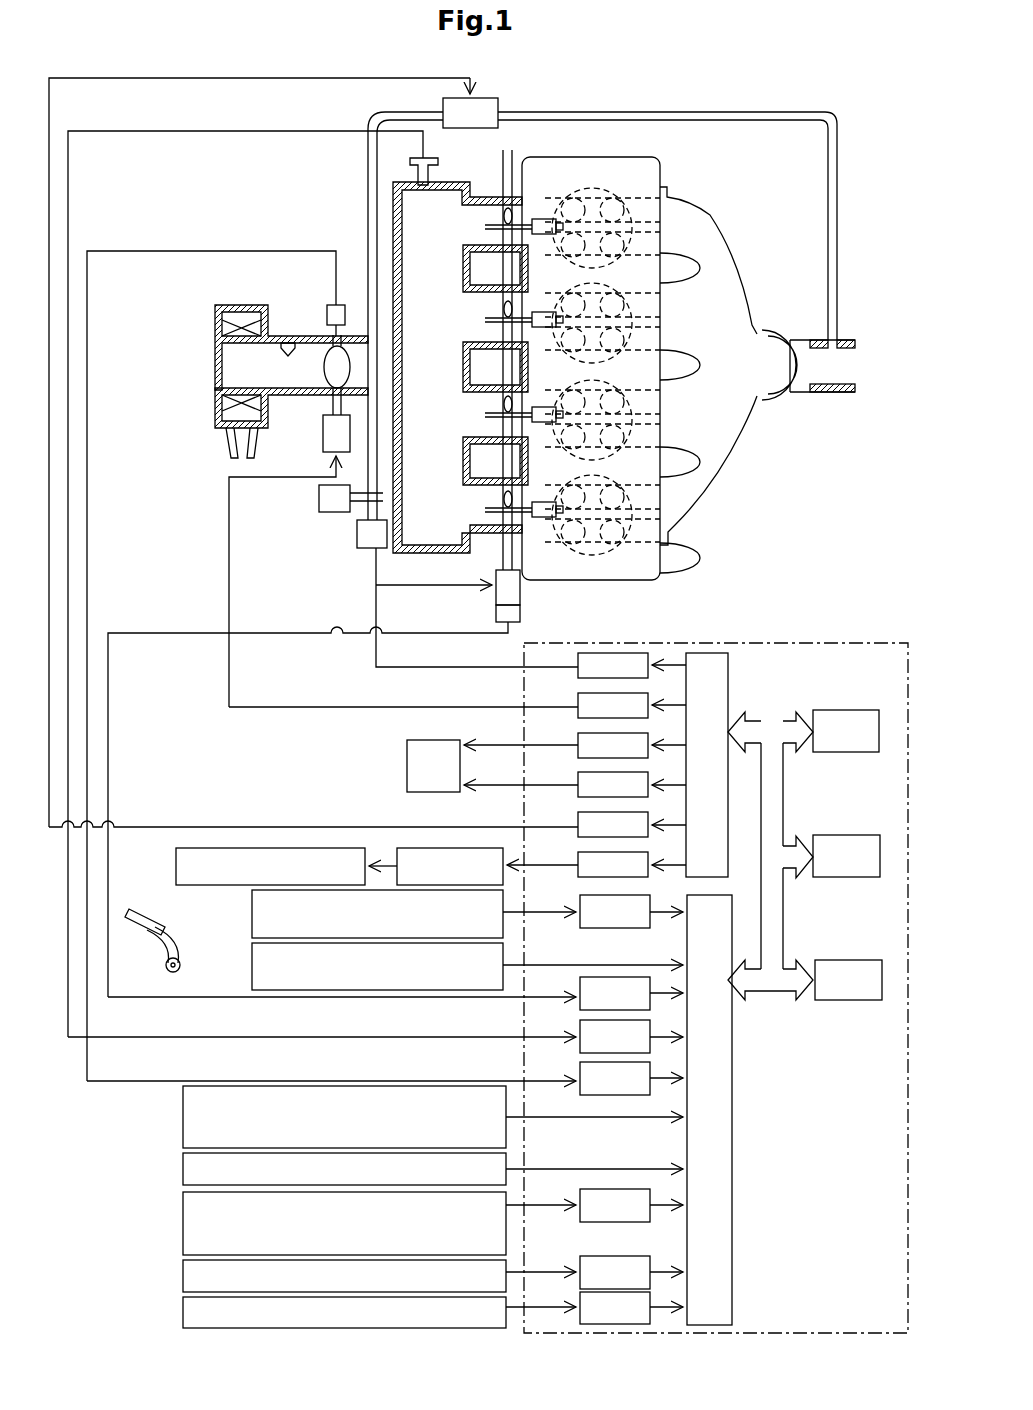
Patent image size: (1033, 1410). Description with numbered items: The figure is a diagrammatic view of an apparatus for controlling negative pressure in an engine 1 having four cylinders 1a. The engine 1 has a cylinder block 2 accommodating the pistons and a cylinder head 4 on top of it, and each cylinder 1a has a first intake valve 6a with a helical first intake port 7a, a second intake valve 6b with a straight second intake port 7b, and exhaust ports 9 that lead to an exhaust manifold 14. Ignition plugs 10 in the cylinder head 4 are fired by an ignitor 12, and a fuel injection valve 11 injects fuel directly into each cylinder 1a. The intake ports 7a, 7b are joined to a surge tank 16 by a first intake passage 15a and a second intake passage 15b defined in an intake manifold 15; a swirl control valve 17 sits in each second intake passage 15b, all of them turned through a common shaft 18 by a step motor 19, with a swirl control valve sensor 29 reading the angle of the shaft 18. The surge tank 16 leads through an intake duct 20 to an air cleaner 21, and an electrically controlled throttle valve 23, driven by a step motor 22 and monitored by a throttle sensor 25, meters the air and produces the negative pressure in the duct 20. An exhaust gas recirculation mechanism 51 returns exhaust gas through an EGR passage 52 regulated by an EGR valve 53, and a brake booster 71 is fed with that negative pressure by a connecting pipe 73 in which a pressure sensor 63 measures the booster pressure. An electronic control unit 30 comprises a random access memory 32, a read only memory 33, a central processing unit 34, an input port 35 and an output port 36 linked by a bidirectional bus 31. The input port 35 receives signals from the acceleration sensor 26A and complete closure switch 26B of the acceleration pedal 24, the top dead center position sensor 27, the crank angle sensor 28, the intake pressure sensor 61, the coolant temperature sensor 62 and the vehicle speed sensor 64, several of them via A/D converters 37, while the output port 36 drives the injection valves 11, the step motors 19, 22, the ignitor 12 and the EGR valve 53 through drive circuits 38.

The engine 1 is at (665, 163).
The cylinder 1a is at (674, 170).
The cylinder block 2 is at (611, 373).
The cylinder head 4 is at (611, 373).
The first intake valve 6a is at (584, 408).
The second intake valve 6b is at (610, 333).
The first intake port 7a is at (575, 592).
The second intake port 7b is at (590, 150).
The exhaust port 9 is at (666, 226).
The ignition plug 10 is at (322, 848).
The fuel injection valve 11 is at (547, 210).
The ignitor 12 is at (480, 848).
The exhaust manifold 14 is at (752, 424).
The intake manifold 15 is at (470, 190).
The first intake passage 15a is at (485, 247).
The second intake passage 15b is at (485, 226).
The surge tank 16 is at (368, 213).
The swirl control valve 17 is at (503, 195).
The common shaft 18 is at (462, 366).
The step motor 19 is at (496, 597).
The intake duct 20 is at (290, 340).
The air cleaner 21 is at (215, 414).
The step motor 22 is at (323, 435).
The throttle valve 23 is at (350, 367).
The acceleration pedal 24 is at (133, 933).
The throttle sensor 25 is at (327, 305).
The acceleration sensor 26A is at (252, 916).
The complete closure switch 26B is at (252, 972).
The top dead center position sensor 27 is at (183, 1118).
The crank angle sensor 28 is at (183, 1168).
The swirl control valve sensor 29 is at (520, 612).
The electronic control unit 30 is at (832, 636).
The bidirectional bus 31 is at (775, 721).
The random access memory 32 is at (848, 710).
The read only memory 33 is at (853, 835).
The central processing unit 34 is at (858, 960).
The input port 35 is at (733, 1232).
The output port 36 is at (728, 660).
The A/D converter 37 is at (580, 930).
The drive circuit 38 is at (563, 672).
The exhaust gas recirculation mechanism 51 is at (604, 112).
The EGR passage 52 is at (762, 111).
The EGR valve 53 is at (490, 100).
The intake pressure sensor 61 is at (410, 161).
The coolant temperature sensor 62 is at (183, 1222).
The pressure sensor 63 is at (319, 497).
The vehicle speed sensor 64 is at (183, 1312).
The brake booster 71 is at (357, 538).
The connecting pipe 73 is at (398, 440).